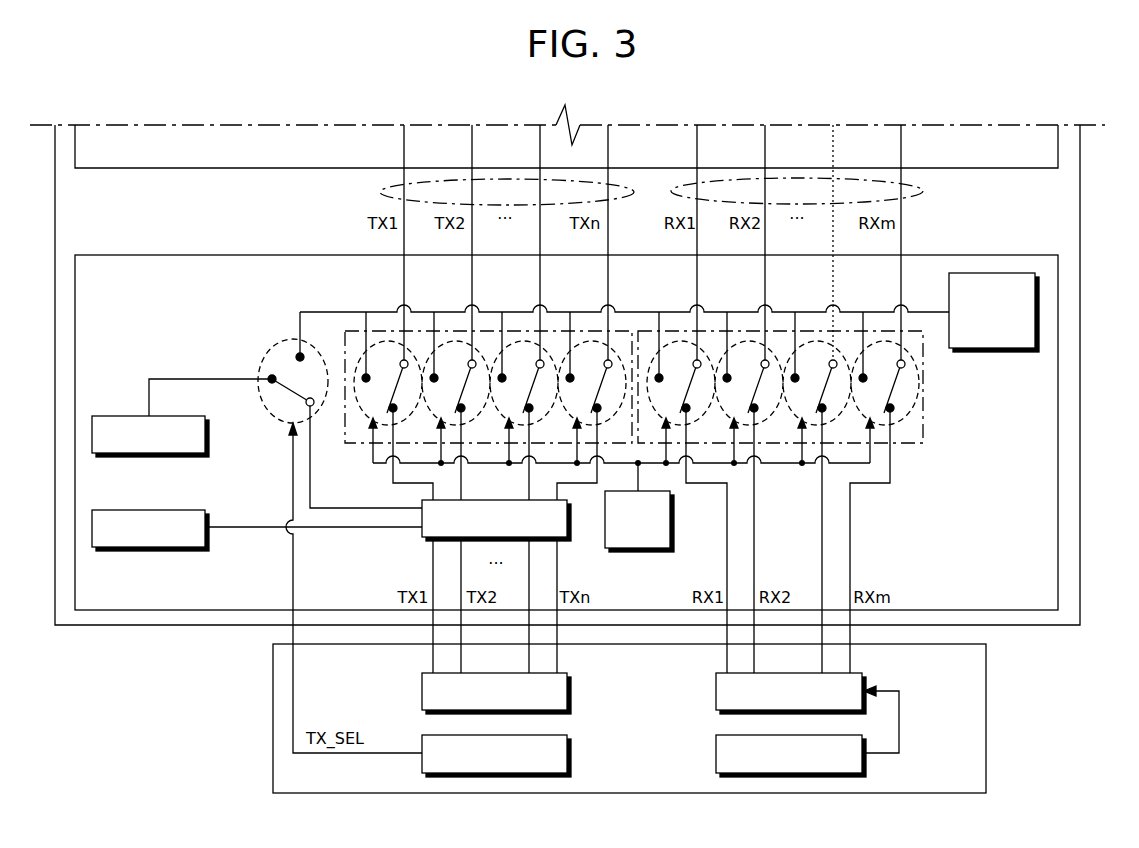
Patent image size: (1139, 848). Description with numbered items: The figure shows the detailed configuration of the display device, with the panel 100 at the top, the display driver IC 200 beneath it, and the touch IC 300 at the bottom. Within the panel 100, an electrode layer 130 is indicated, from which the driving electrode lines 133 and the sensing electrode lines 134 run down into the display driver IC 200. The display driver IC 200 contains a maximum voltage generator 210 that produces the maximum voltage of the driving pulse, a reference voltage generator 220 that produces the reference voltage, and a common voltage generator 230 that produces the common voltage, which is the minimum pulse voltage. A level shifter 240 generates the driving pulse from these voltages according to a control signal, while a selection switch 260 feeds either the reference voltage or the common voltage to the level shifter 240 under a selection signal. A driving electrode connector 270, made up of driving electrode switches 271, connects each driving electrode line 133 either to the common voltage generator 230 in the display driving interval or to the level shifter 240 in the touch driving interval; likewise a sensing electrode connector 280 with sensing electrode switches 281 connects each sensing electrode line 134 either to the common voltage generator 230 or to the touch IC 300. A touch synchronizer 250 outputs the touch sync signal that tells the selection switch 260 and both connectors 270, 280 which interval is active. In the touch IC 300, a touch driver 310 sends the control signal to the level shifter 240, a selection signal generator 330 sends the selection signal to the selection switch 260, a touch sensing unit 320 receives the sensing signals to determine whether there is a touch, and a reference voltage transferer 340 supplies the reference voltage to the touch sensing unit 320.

The panel 100 is at (1080, 316).
The touch sensing layer 130 is at (1058, 145).
The driving electrode lines 133 is at (380, 190).
The sensing electrode lines 134 is at (923, 191).
The display driver IC 200 is at (1059, 440).
The maximum voltage generator 210 is at (160, 550).
The reference voltage generator 220 is at (113, 415).
The common voltage generator 230 is at (1017, 352).
The level shifter 240 is at (421, 536).
The touch synchronizer 250 is at (645, 553).
The selection switch 260 is at (268, 358).
The driving electrode connector 270 is at (448, 366).
The driving electrode switch 271 is at (390, 343).
The sensing electrode connector 280 is at (814, 397).
The sensing electrode switch 281 is at (902, 416).
The touch IC 300 is at (662, 718).
The touch driver 310 is at (496, 693).
The touch sensing unit 320 is at (791, 693).
The selection signal generator 330 is at (496, 756).
The reference voltage transferer 340 is at (807, 731).